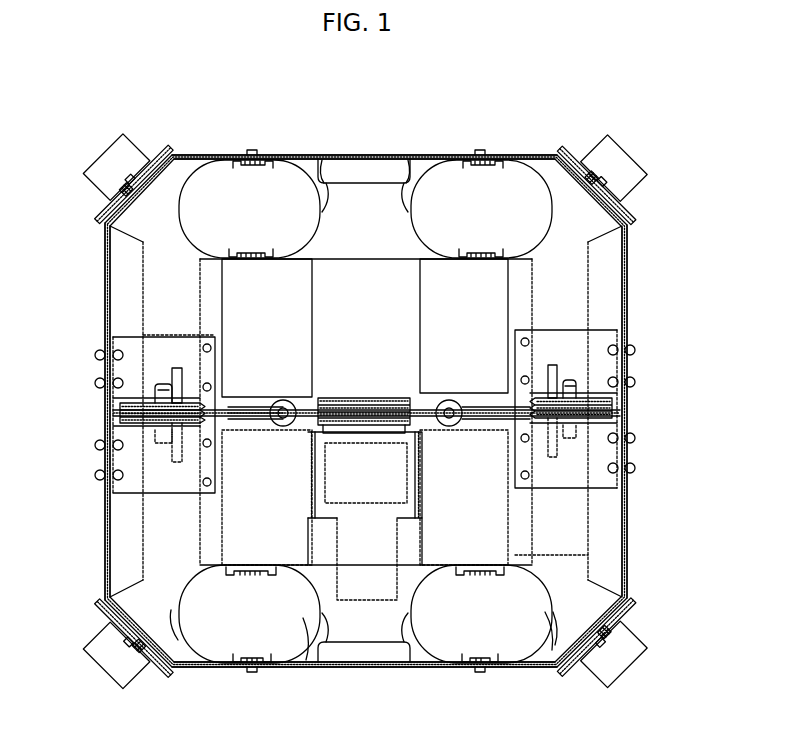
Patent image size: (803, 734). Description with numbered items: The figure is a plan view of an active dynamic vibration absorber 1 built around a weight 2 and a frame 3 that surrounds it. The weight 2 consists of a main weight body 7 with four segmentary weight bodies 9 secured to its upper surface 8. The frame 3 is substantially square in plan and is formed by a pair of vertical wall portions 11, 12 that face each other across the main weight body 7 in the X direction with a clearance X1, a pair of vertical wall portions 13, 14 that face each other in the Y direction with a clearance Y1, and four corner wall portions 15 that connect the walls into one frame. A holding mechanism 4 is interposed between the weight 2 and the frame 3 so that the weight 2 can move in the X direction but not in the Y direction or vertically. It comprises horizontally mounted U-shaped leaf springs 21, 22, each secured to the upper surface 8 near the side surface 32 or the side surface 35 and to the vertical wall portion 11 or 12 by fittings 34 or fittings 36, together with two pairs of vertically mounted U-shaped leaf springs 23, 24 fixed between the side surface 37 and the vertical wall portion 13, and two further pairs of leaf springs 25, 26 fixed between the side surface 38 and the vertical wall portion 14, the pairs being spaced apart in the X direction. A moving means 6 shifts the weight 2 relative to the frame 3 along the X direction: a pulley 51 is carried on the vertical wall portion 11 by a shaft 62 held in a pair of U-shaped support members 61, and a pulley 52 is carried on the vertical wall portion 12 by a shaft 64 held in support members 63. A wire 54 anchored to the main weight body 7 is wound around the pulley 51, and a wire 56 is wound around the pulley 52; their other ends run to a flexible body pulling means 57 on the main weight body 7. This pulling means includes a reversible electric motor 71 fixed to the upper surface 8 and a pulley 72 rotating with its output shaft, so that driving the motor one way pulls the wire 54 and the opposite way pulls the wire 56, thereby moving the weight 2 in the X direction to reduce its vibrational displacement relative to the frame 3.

The active dynamic vibration absorber 1 is at (647, 230).
The weight 2 is at (545, 544).
The frame 3 is at (96, 541).
The holding mechanism 4 is at (308, 647).
The moving means 6 is at (398, 585).
The main weight body 7 is at (565, 278).
The upper surface 8 is at (200, 307).
The segmentary weight bodies 9 is at (278, 283).
The vertical wall portion 11 is at (104, 518).
The vertical wall portion 12 is at (627, 252).
The vertical wall portion 13 is at (509, 667).
The vertical wall portion 14 is at (222, 154).
The corner wall portions 15 is at (112, 222).
The leaf spring 21 is at (157, 487).
The leaf spring 22 is at (563, 342).
The leaf springs 23 is at (305, 620).
The leaf springs 24 is at (552, 620).
The leaf springs 25 is at (170, 193).
The leaf springs 26 is at (405, 207).
The side surface 32 is at (200, 331).
The fittings 34 is at (130, 371).
The side surface 35 is at (530, 553).
The fittings 36 is at (600, 460).
The side surface 37 is at (323, 567).
The side surface 38 is at (342, 258).
The pulley 51 is at (127, 413).
The pulley 52 is at (618, 400).
The wire 54 is at (223, 417).
The wire 56 is at (510, 413).
The flexible body pulling means 57 is at (409, 391).
The support members 61 is at (110, 433).
The shaft 62 is at (172, 436).
The support members 63 is at (590, 398).
The shaft 64 is at (567, 378).
The reversible electric motor 71 is at (405, 477).
The pulley 72 is at (343, 395).
The X direction X is at (333, 372).
The Y direction Y is at (405, 280).
The clearance X1 is at (189, 291).
The clearance Y1 is at (369, 246).